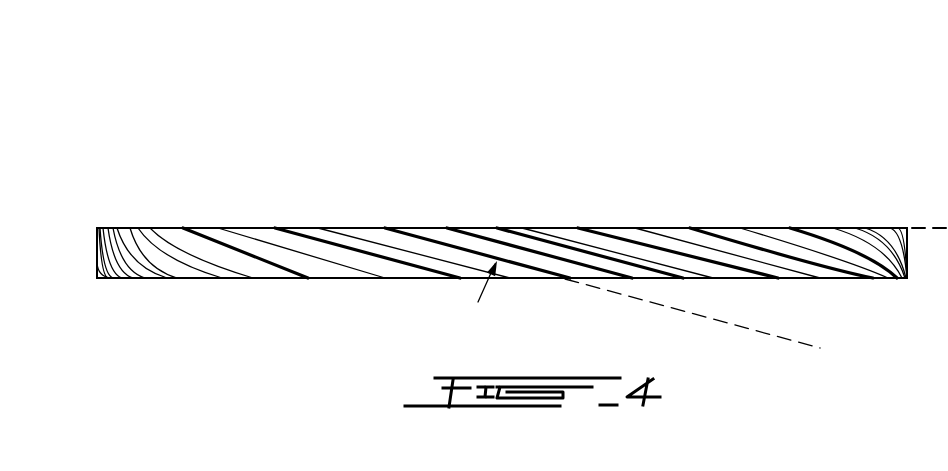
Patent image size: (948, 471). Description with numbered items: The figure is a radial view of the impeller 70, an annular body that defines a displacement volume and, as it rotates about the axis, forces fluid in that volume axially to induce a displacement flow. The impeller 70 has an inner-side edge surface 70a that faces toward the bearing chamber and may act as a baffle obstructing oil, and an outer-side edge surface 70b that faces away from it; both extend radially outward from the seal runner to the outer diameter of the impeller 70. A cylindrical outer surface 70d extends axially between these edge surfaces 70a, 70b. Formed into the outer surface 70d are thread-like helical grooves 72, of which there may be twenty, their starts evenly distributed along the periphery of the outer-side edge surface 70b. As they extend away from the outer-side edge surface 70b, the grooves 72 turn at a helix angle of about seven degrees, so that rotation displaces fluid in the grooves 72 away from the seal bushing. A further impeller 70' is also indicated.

The impeller 70 is at (521, 147).
The inner-side edge surface 70a is at (265, 280).
The outer-side edge surface 70b is at (252, 228).
The outer surface 70d is at (140, 256).
The grooves 72 is at (395, 215).
The alternative body (next figure) 70' is at (867, 449).